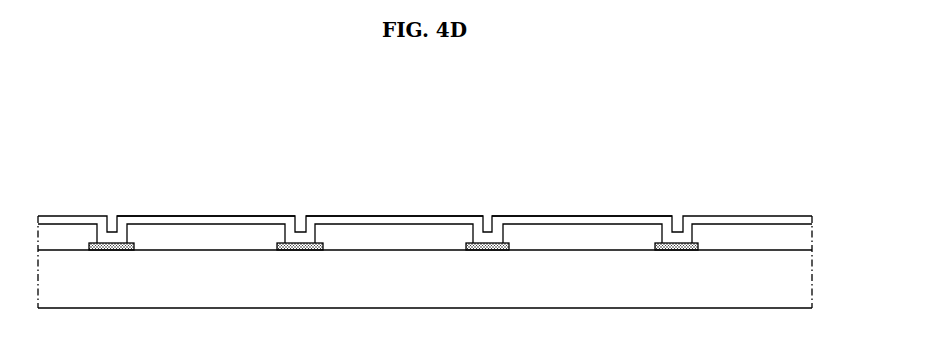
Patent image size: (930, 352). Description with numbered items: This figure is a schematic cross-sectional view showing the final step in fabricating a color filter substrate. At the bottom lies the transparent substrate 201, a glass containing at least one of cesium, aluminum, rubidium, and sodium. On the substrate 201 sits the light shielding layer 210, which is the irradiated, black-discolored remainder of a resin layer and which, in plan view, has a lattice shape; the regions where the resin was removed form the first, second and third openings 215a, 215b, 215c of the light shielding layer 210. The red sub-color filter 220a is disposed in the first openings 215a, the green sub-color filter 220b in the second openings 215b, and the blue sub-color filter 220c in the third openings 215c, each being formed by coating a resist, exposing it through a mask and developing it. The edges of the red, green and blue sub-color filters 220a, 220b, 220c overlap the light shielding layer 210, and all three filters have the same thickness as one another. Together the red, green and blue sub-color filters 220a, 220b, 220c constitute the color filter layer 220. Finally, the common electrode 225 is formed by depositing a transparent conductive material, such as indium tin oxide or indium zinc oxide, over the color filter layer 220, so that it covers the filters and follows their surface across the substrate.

The substrate 201 is at (794, 276).
The light shielding layer 210 is at (110, 250).
The first openings 215a is at (176, 243).
The second openings 215b is at (372, 242).
The third openings 215c is at (57, 243).
The color filter layer 220 is at (275, 138).
The red sub-color filter 220a is at (268, 222).
The green sub-color filter 220b is at (452, 222).
The blue sub-color filter 220c is at (570, 222).
The common electrode 225 is at (127, 222).